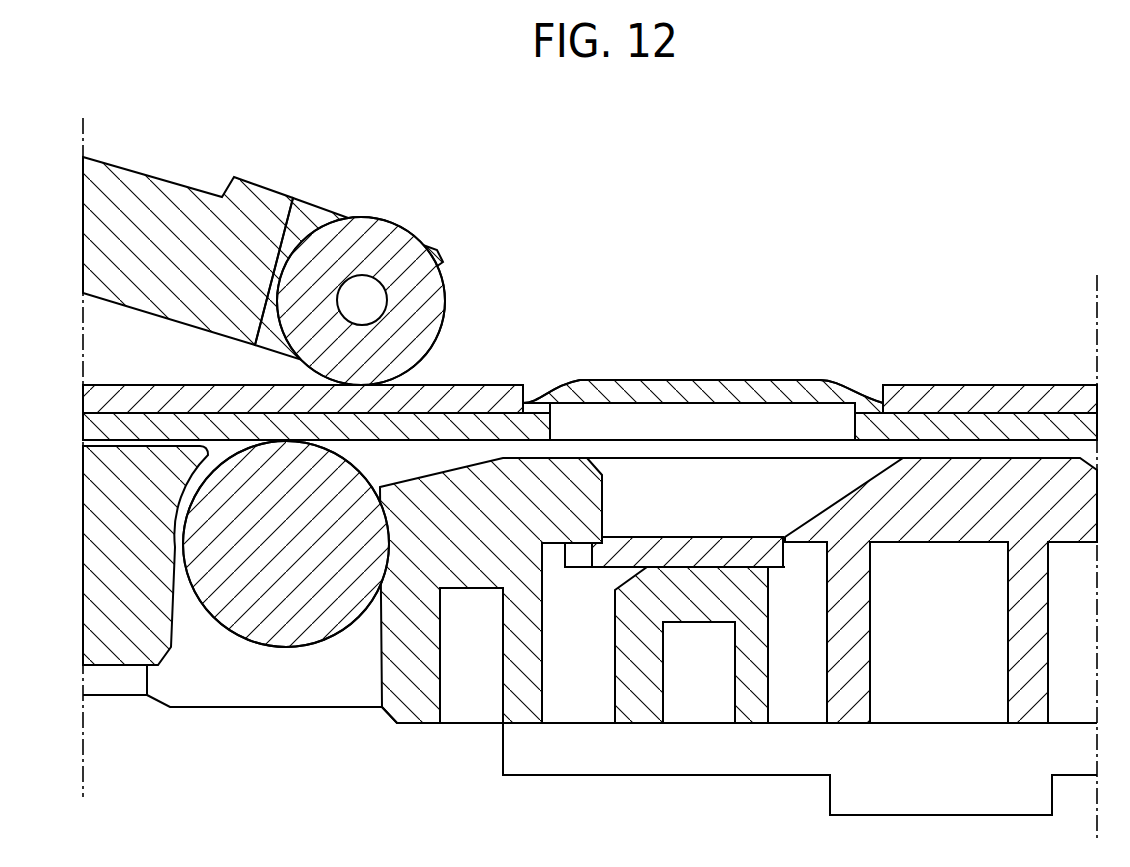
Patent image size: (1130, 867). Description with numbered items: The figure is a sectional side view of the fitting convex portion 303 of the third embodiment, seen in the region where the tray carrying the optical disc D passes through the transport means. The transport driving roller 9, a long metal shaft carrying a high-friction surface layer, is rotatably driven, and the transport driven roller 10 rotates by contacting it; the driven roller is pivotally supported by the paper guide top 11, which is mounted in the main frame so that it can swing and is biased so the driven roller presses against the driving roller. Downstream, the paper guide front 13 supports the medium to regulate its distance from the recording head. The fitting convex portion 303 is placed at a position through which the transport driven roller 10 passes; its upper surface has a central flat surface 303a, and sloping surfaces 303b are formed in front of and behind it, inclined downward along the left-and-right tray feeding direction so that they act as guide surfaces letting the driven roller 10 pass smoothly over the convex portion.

The transport driving roller 9 is at (290, 648).
The transport driven roller 10 is at (380, 240).
The paper guide top 11 is at (265, 197).
The paper guide front 13 is at (685, 725).
The fitting convex portion 303 is at (760, 398).
The flat surface 303a is at (690, 380).
The sloping surface 303b is at (557, 387).
The optical disc D is at (155, 395).